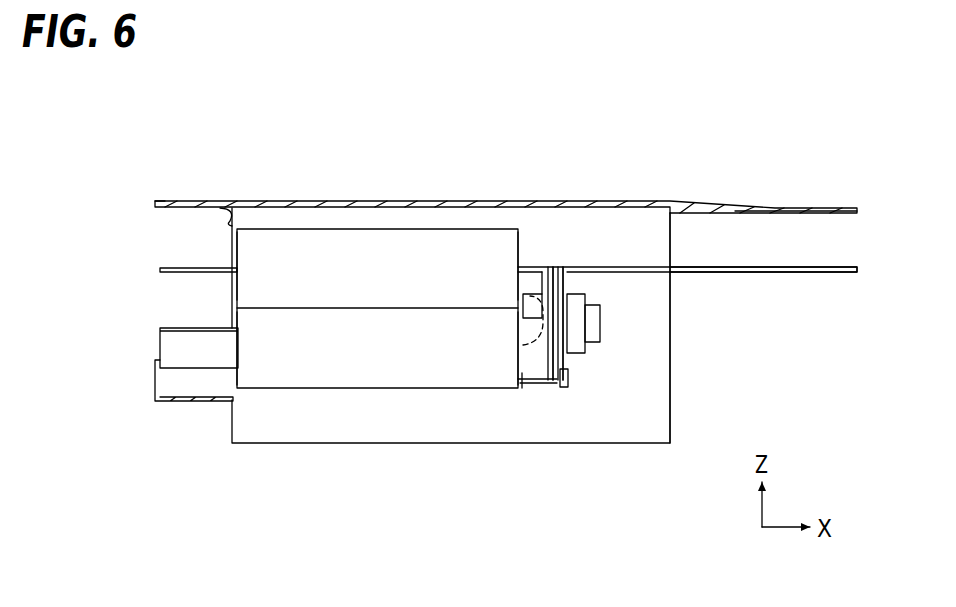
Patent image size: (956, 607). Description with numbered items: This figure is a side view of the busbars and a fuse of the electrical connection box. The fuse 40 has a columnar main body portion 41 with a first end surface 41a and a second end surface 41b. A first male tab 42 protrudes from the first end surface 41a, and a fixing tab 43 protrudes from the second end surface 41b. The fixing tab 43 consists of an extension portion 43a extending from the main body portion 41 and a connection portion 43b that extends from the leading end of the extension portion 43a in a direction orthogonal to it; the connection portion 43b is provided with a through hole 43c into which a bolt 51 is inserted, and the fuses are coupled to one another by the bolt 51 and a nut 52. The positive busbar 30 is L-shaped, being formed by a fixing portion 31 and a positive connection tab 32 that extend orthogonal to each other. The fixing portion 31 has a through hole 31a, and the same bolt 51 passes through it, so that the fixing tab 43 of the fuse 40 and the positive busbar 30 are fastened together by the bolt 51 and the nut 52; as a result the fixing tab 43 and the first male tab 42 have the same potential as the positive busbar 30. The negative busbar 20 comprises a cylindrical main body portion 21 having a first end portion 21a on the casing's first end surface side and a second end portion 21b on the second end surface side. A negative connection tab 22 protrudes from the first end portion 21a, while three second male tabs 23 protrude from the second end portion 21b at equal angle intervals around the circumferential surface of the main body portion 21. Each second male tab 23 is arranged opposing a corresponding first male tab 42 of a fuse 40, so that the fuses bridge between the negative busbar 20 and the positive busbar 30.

The negative busbar 20 is at (571, 201).
The main body portion 21 is at (506, 201).
The first end portion 21a is at (672, 244).
The second end portion 21b is at (223, 201).
The negative connection tab 22 is at (810, 208).
The second male tab 23 is at (180, 200).
The positive busbar 30 is at (602, 325).
The fixing portion 31 is at (568, 366).
The through hole 31a is at (567, 313).
The positive connection tab 32 is at (812, 274).
The fuse 40 is at (342, 308).
The main body portion 41 is at (303, 236).
The first end surface 41a is at (232, 245).
The second end surface 41b is at (520, 237).
The first male tab 42 is at (160, 269).
The fixing tab 43 is at (629, 341).
The extension portion 43a is at (520, 267).
The connection portion 43b is at (510, 325).
The through hole 43c is at (523, 345).
The bolt 51 is at (523, 299).
The nut 52 is at (581, 353).